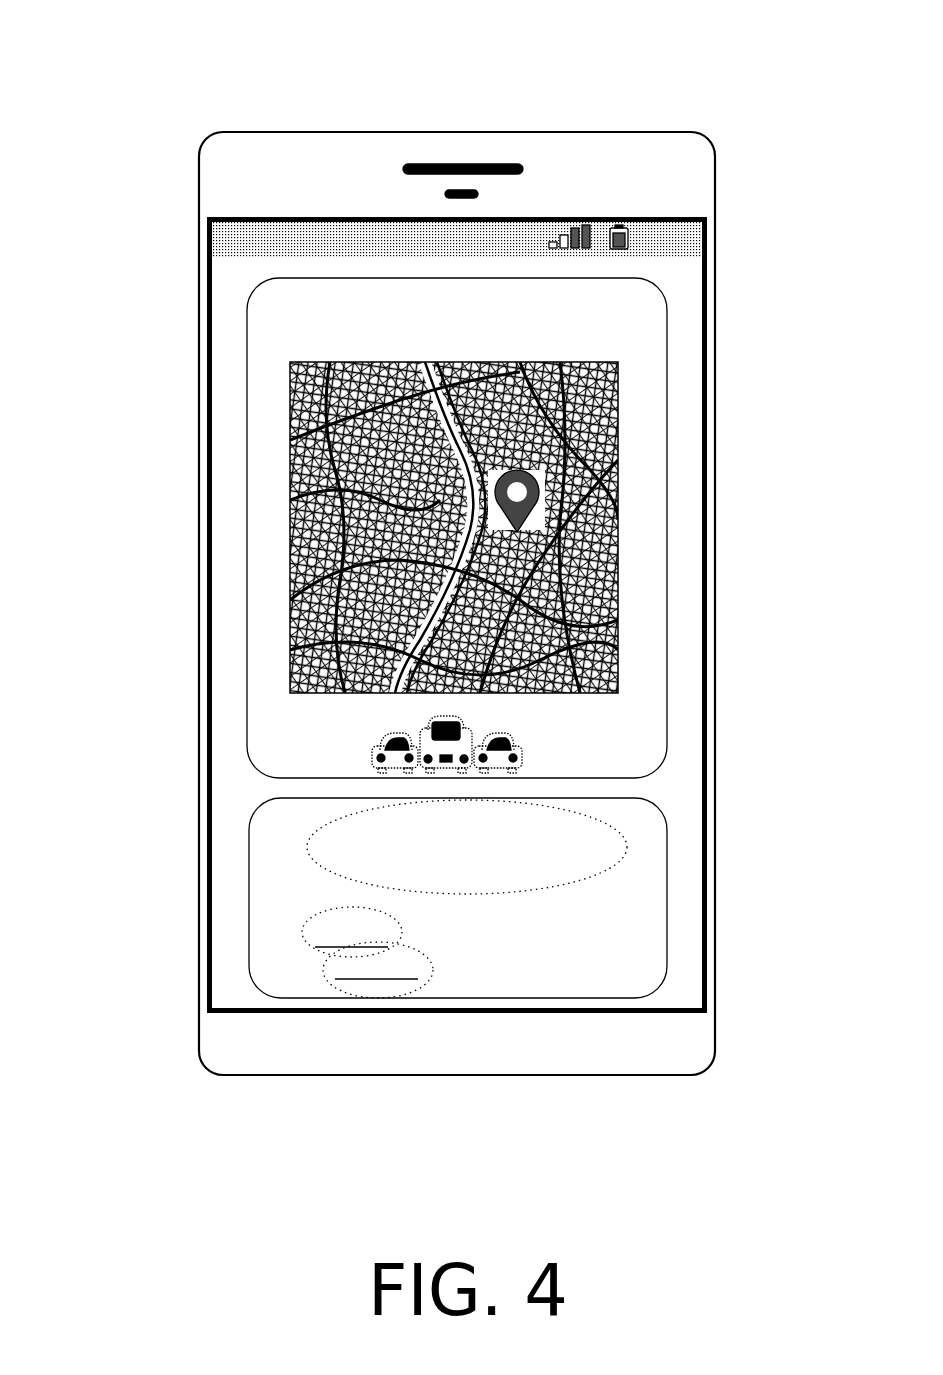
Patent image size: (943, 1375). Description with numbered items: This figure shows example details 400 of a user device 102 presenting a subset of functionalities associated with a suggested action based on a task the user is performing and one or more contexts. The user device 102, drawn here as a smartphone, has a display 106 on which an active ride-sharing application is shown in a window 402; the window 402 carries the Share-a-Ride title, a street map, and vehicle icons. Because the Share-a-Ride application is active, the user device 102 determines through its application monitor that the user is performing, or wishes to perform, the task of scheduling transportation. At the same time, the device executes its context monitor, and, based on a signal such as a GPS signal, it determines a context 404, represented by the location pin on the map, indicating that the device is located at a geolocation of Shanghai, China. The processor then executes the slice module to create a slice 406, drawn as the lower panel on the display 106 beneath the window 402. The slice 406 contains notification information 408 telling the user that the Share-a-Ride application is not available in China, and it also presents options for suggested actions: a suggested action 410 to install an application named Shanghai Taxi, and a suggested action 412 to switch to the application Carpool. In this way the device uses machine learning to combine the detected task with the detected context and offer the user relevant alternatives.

The details 400 is at (128, 44).
The user device 102 is at (657, 131).
The display 106 is at (707, 310).
The window 402 is at (667, 472).
The context 404 is at (568, 547).
The slice 406 is at (667, 889).
The notification information 408 is at (313, 830).
The suggested action 410 is at (305, 917).
The suggested action 412 is at (327, 972).